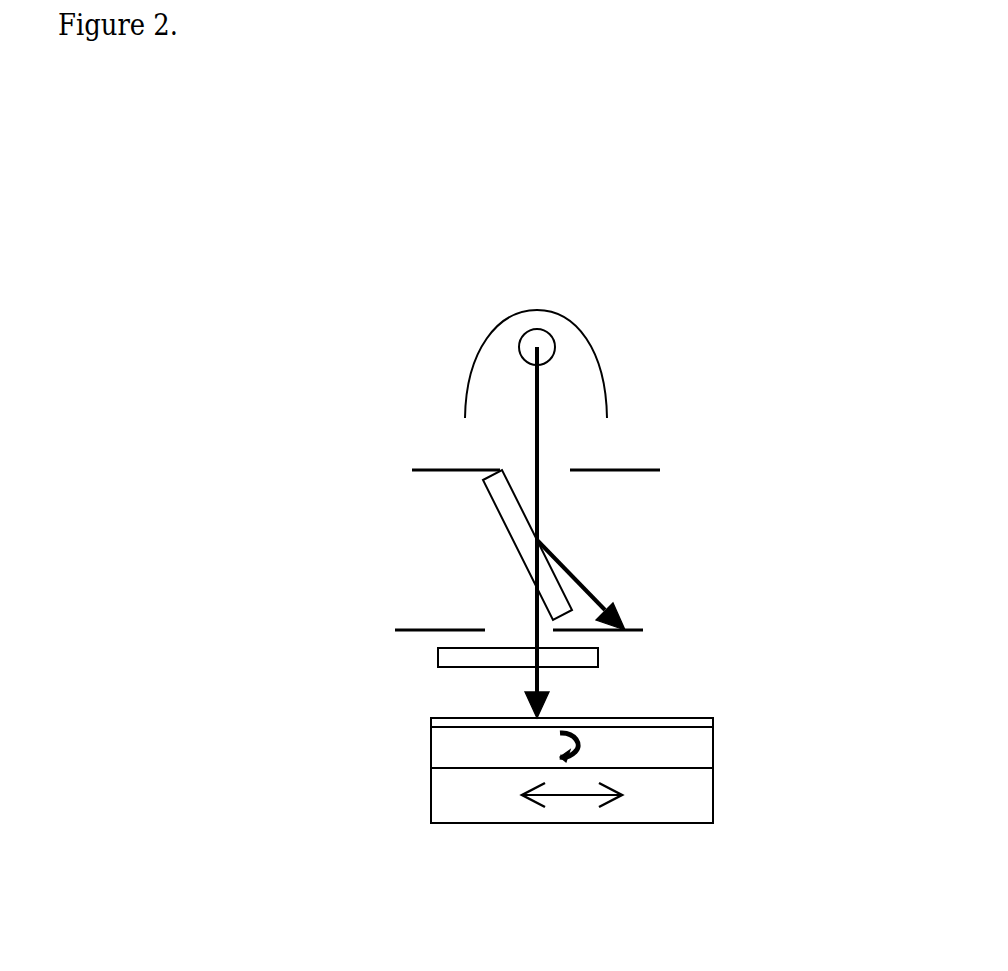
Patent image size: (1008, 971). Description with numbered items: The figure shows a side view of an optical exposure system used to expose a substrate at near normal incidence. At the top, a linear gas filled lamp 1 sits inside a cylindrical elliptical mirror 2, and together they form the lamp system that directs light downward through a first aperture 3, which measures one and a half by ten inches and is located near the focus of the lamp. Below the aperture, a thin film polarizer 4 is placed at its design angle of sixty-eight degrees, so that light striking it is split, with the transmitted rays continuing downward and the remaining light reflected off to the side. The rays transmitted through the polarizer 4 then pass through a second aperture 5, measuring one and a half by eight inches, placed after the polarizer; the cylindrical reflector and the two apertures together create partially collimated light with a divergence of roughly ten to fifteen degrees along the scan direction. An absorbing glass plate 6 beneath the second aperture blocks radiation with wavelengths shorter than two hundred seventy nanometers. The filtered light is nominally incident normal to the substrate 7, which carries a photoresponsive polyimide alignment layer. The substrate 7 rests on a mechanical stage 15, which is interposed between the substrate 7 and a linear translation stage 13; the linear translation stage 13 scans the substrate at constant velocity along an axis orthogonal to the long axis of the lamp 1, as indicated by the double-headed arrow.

The linear gas filled lamp 1 is at (528, 332).
The cylindrical elliptical mirror 2 is at (567, 327).
The first aperture 3 is at (424, 465).
The thin film polarizer 4 is at (493, 487).
The second aperture 5 is at (418, 627).
The absorbing glass plate 6 is at (585, 657).
The substrate 7 is at (687, 720).
The mechanical stage 15 is at (677, 748).
The linear translation stage 13 is at (503, 802).